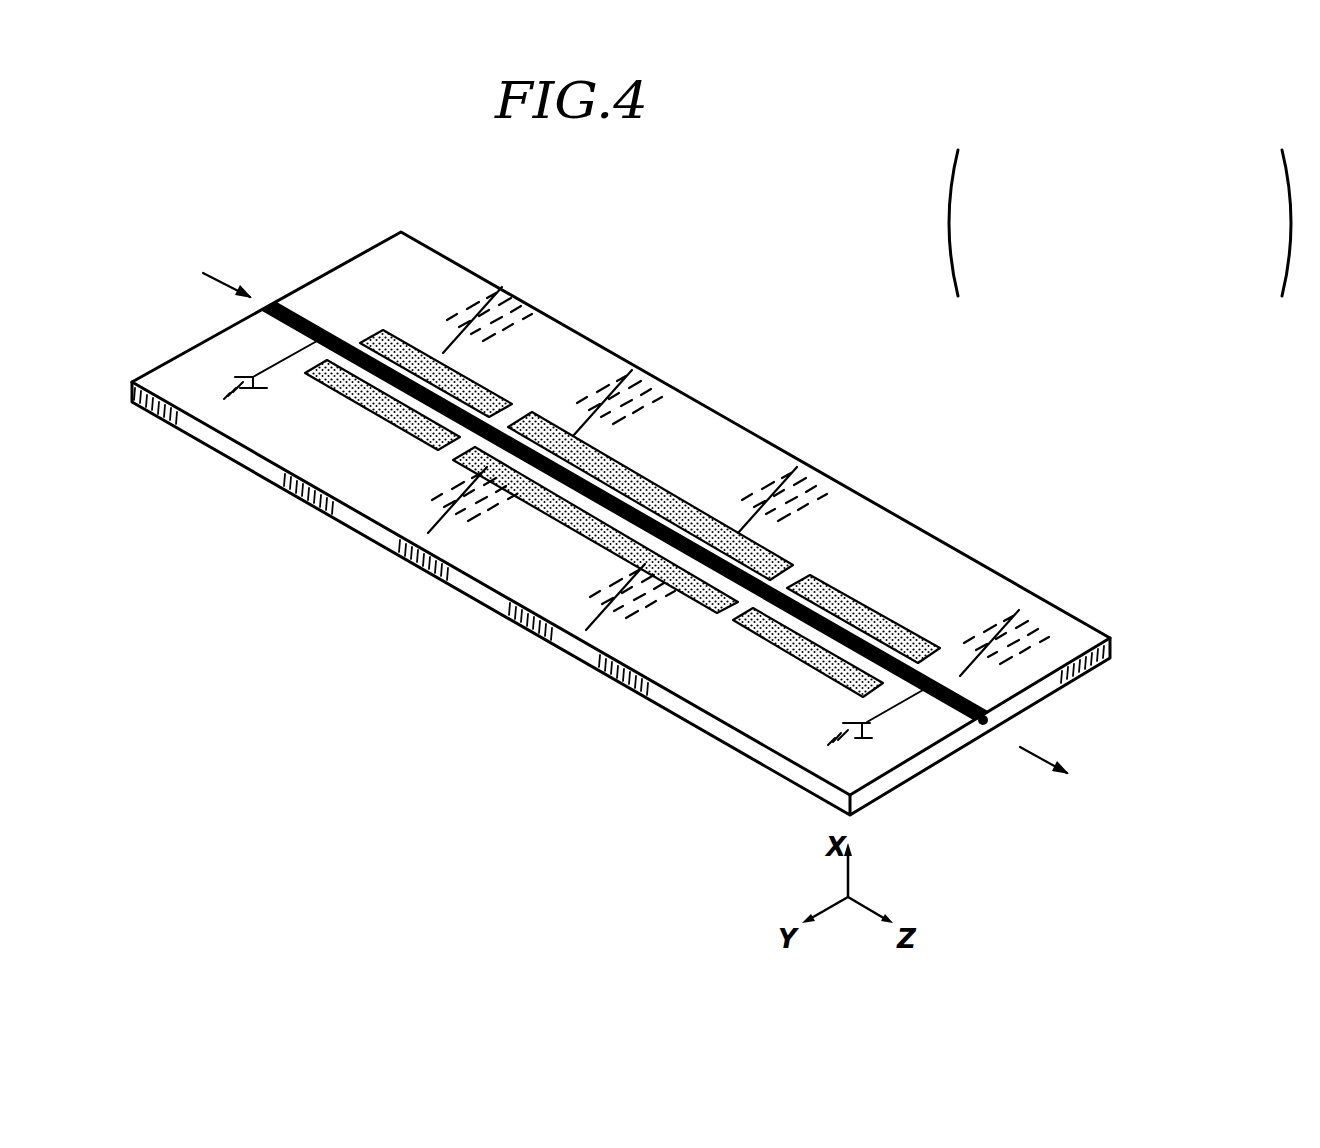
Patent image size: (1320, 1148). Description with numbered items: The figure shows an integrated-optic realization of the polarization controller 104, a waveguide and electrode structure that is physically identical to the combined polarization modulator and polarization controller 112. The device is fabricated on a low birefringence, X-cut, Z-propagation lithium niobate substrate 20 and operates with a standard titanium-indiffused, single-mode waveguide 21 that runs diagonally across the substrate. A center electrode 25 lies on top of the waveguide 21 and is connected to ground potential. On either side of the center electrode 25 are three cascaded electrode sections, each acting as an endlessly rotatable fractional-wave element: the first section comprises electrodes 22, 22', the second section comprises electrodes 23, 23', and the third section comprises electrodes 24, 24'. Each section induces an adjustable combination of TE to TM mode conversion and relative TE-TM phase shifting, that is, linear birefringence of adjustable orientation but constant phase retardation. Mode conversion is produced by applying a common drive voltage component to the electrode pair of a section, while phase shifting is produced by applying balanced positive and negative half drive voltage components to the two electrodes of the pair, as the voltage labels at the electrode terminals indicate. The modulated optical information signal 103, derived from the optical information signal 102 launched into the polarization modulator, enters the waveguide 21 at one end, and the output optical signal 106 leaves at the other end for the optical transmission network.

The substrate 20 is at (757, 745).
The waveguide 21 is at (275, 302).
The electrode 22 is at (535, 320).
The electrode 22' is at (263, 428).
The electrode 23 is at (716, 464).
The electrode 23' is at (511, 533).
The electrode 24 is at (960, 567).
The electrode 24' is at (690, 676).
The center electrode 25 is at (346, 341).
The modulated optical information signal 103 is at (203, 273).
The optical information signal 102 is at (128, 308).
The polarization controller 104 is at (862, 268).
The output optical signal 106 is at (1020, 750).
The polarization modulator and polarization controller 112 is at (1140, 303).